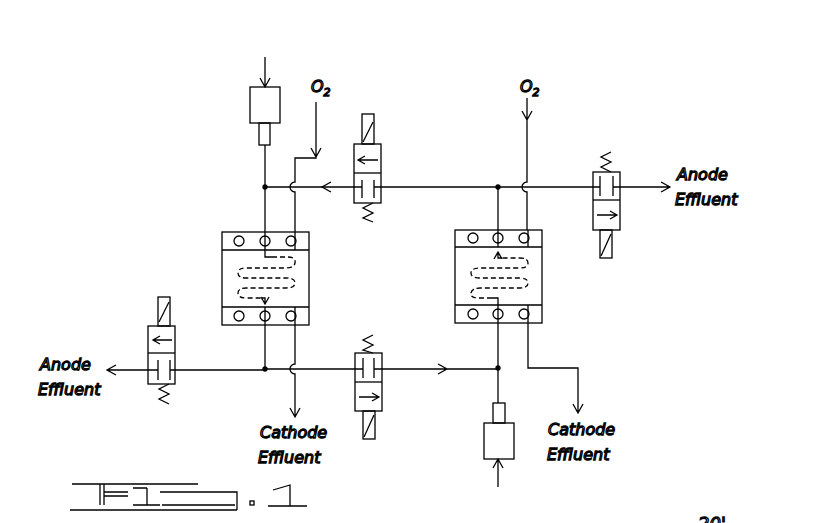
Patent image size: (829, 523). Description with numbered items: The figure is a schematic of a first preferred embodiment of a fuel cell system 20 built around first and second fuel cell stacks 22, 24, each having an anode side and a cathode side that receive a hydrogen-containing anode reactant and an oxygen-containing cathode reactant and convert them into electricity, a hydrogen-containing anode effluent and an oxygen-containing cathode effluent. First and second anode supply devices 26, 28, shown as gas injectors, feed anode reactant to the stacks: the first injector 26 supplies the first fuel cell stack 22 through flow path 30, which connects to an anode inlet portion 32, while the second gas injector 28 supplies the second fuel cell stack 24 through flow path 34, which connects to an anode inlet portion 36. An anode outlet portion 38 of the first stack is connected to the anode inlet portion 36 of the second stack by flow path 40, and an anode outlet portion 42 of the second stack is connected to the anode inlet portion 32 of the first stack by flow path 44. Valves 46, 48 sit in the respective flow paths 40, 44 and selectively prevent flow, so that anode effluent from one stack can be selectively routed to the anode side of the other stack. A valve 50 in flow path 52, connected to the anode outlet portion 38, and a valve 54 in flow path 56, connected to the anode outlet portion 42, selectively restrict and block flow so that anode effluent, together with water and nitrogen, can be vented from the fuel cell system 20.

The fuel cell system 20 is at (584, 74).
The first fuel cell stack 22 is at (226, 283).
The second fuel cell stack 24 is at (530, 295).
The first anode supply device 26 is at (256, 103).
The second anode supply device 28 is at (490, 446).
The flow path 30 is at (262, 167).
The anode inlet portion 32 is at (257, 218).
The flow path 34 is at (500, 388).
The anode inlet portion 36 is at (485, 342).
The anode outlet portion 38 is at (254, 344).
The flow path 40 is at (318, 368).
The anode outlet portion 42 is at (492, 219).
The flow path 44 is at (458, 186).
The valve 46 is at (375, 390).
The valve 48 is at (380, 152).
The valve 50 is at (149, 333).
The flow path 52 is at (246, 372).
The valve 54 is at (618, 175).
The flow path 56 is at (555, 186).